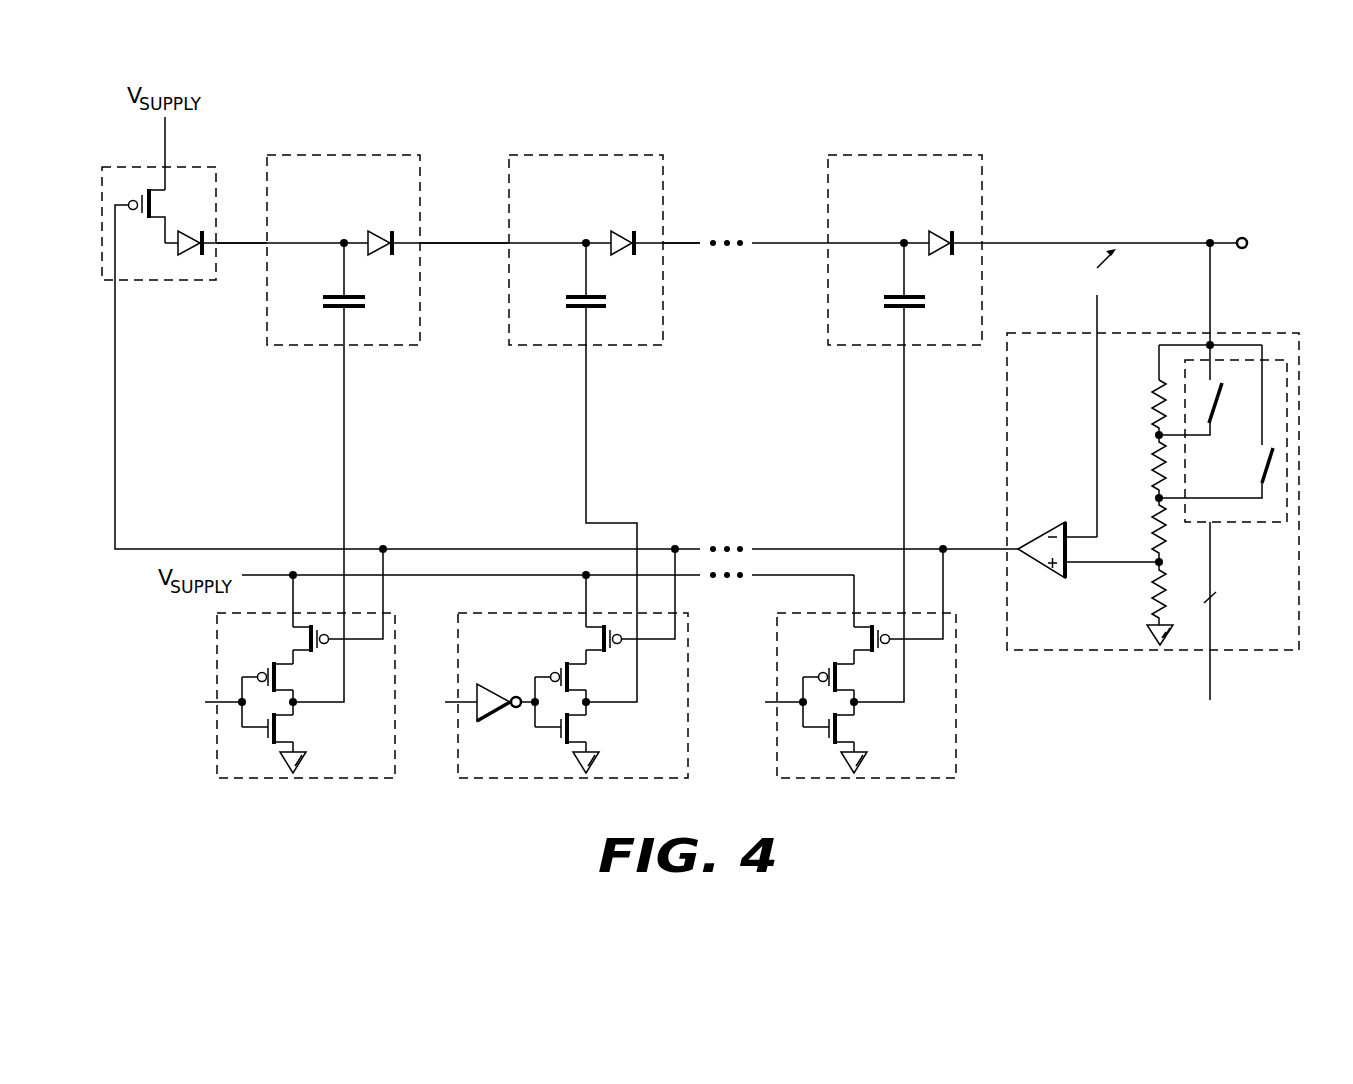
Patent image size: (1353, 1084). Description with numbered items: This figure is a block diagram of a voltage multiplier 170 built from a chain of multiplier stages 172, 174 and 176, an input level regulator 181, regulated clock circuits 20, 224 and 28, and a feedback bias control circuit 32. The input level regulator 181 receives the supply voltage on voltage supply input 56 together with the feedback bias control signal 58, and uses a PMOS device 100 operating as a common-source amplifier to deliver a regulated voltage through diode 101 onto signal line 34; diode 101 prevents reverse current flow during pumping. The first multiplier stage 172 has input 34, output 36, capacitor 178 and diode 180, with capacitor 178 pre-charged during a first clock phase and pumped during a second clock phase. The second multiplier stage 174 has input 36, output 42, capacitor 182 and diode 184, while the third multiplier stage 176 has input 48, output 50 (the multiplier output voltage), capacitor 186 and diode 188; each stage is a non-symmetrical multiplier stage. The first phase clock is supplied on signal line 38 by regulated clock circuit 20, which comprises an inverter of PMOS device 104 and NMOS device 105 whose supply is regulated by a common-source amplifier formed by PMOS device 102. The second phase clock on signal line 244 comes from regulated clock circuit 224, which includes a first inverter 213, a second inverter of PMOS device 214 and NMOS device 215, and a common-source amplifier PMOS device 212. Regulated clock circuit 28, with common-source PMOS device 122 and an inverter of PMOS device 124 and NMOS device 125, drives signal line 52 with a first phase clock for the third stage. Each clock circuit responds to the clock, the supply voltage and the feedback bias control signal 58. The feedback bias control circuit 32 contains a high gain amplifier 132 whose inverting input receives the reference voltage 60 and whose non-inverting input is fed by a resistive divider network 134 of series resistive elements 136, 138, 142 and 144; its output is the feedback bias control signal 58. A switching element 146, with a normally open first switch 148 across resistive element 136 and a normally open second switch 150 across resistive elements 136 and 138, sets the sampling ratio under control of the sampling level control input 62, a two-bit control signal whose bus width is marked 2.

The voltage multiplier 170 is at (1150, 124).
The voltage supply input 56 is at (165, 137).
The PMOS device 100 is at (158, 205).
The diode 101 is at (176, 249).
The input level regulator 181 is at (196, 282).
The signal line 34 is at (240, 241).
The first multiplier stage 172 is at (421, 178).
The capacitor 178 is at (332, 296).
The diode 180 is at (381, 229).
The output 36 is at (457, 240).
The second multiplier stage 174 is at (663, 178).
The capacitor 182 is at (574, 297).
The diode 184 is at (623, 229).
The output 42 is at (686, 240).
The input 48 is at (799, 240).
The third multiplier stage 176 is at (983, 178).
The capacitor 186 is at (893, 297).
The diode 188 is at (943, 229).
The output 50 is at (1029, 240).
The reference voltage V_REF 60 is at (1096, 318).
The feedback bias control circuit 32 is at (1048, 652).
The high gain amplifier 132 is at (1027, 540).
The resistive divider network 134 is at (1111, 495).
The resistive element 136 is at (1152, 394).
The resistive element 138 is at (1152, 459).
The resistive element 142 is at (1152, 522).
The resistive element 144 is at (1150, 585).
The switching element 146 is at (1266, 523).
The first switch 148 is at (1225, 405).
The second switch 150 is at (1262, 466).
The two-bit bus width marker 2 is at (1217, 601).
The sampling level control input 62 is at (1208, 681).
The feedback bias control signal 58 is at (118, 472).
The signal line 38 is at (342, 503).
The signal line 244 is at (583, 503).
The signal line 52 is at (901, 503).
The regulated clock circuit 20 is at (216, 641).
The PMOS device 102 is at (304, 641).
The PMOS device 104 is at (283, 674).
The NMOS device 105 is at (268, 737).
The regulated clock circuit 224 is at (458, 641).
The first inverter 213 is at (497, 690).
The PMOS device 212 is at (597, 641).
The PMOS device 214 is at (576, 674).
The NMOS device 215 is at (561, 737).
The regulated clock circuit 28 is at (776, 641).
The PMOS device 122 is at (865, 641).
The PMOS device 124 is at (844, 674).
The NMOS device 125 is at (829, 737).